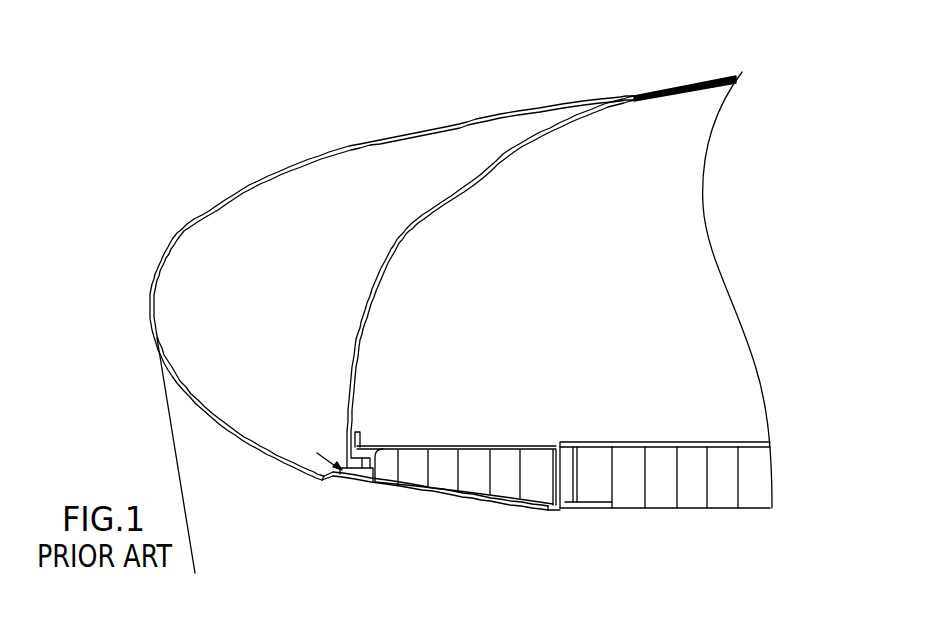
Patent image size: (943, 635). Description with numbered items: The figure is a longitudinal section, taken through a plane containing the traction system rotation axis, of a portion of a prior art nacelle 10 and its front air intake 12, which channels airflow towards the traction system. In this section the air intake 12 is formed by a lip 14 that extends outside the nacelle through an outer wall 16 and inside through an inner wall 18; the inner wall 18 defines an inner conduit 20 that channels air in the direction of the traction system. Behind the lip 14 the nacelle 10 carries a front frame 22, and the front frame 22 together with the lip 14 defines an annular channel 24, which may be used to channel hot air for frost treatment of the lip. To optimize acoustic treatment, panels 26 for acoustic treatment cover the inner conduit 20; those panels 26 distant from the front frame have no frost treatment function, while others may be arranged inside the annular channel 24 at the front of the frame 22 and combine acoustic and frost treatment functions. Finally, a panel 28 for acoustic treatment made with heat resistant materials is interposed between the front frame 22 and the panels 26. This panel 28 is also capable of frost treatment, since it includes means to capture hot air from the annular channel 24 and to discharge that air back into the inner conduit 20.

The nacelle 10 is at (217, 151).
The air intake 12 is at (150, 430).
The lip 14 is at (160, 255).
The outer wall 16 is at (690, 82).
The inner wall 18 is at (680, 510).
The inner conduit 20 is at (550, 510).
The front frame 22 is at (407, 238).
The annular channel 24 is at (276, 278).
The panels for acoustic treatment 26 is at (740, 473).
The panel for acoustic treatment with heat resistant materials 28 is at (483, 482).